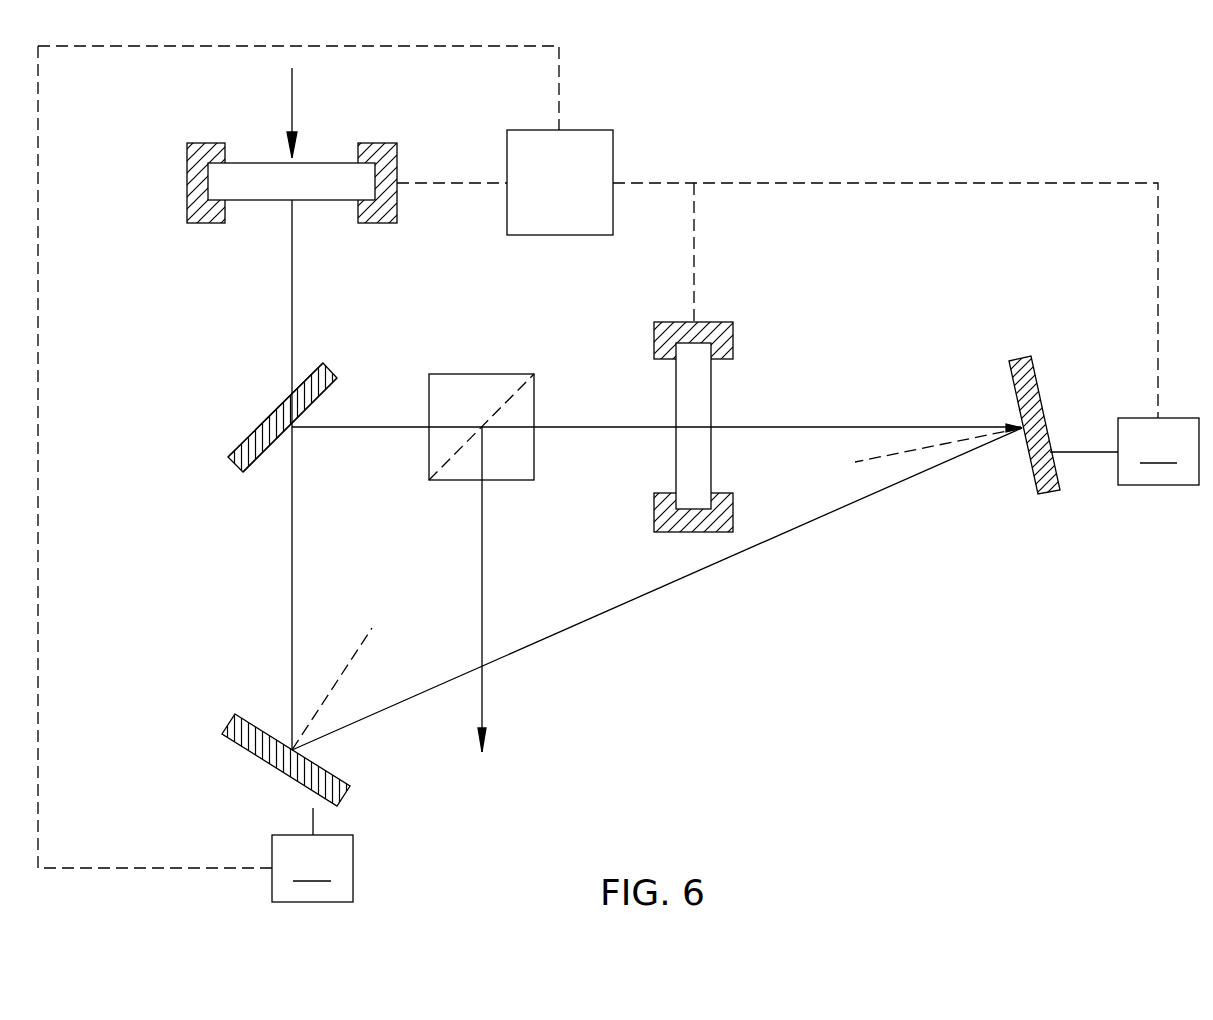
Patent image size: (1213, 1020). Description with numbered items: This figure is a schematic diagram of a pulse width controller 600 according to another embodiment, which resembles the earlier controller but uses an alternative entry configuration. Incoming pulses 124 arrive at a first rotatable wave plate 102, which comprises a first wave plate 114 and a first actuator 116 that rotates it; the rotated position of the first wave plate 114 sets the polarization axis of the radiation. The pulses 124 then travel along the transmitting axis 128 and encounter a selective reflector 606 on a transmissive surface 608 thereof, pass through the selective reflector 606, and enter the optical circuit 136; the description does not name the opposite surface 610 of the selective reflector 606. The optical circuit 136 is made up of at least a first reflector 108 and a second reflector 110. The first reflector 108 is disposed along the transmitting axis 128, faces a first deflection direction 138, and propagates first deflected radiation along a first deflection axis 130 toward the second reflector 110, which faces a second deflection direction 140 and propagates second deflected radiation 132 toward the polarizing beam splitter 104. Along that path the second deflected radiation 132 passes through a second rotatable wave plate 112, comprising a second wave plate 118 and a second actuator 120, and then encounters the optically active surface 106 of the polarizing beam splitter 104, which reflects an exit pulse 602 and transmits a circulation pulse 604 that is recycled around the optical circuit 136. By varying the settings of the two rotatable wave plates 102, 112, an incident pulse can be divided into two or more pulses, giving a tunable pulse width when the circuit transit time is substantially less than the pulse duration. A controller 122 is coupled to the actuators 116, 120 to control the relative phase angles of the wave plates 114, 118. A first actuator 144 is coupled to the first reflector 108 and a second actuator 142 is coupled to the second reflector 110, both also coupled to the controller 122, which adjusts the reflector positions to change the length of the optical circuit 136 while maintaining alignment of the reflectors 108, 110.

The pulse width controller 600 is at (745, 90).
The first rotatable wave plate 102 is at (272, 154).
The first wave plate 114 is at (247, 163).
The first actuator 116 is at (187, 178).
The pulses 124 is at (292, 88).
The controller 122 is at (585, 130).
The transmitting axis 128 is at (292, 585).
The transmissive surface 608 is at (281, 414).
The selective reflector 606 is at (278, 405).
The second surface of beam splitter 610 is at (263, 457).
The circulation pulse 604 is at (388, 427).
The polarizing beam splitter 104 is at (445, 452).
The optically active surface 106 is at (458, 450).
The exit pulse 602 is at (482, 530).
The second rotatable wave plate 112 is at (694, 400).
The second actuator 120 is at (654, 340).
The second wave plate 118 is at (676, 458).
The second deflected radiation 132 is at (902, 428).
The second deflection direction 140 is at (870, 458).
The second reflector 110 is at (1040, 392).
The second actuator 142 is at (1158, 451).
The first deflection axis 130 is at (598, 615).
The optical circuit 136 is at (715, 602).
The first deflection direction 138 is at (360, 650).
The first reflector 108 is at (283, 778).
The first actuator 144 is at (312, 868).